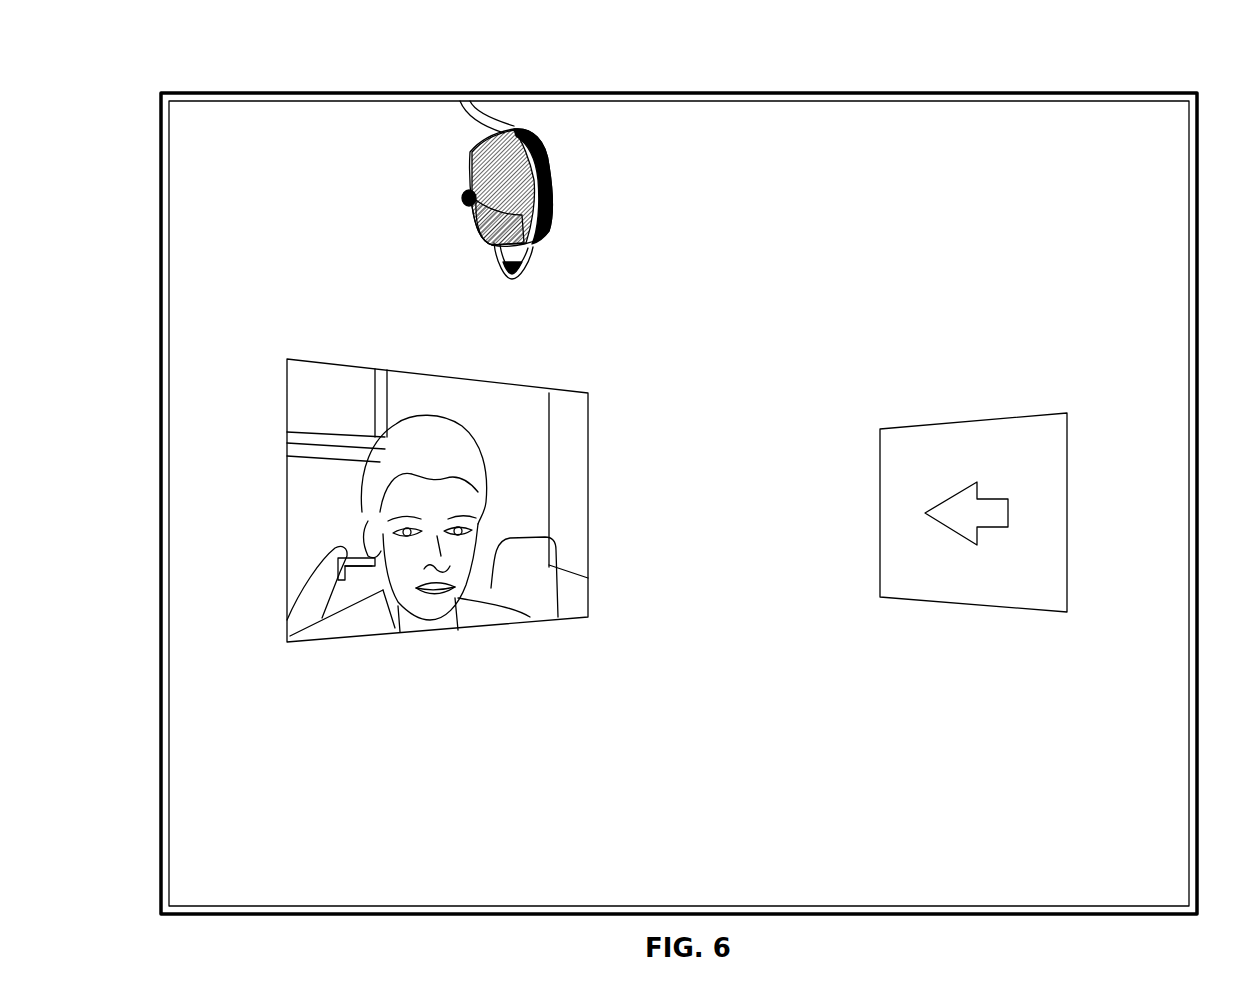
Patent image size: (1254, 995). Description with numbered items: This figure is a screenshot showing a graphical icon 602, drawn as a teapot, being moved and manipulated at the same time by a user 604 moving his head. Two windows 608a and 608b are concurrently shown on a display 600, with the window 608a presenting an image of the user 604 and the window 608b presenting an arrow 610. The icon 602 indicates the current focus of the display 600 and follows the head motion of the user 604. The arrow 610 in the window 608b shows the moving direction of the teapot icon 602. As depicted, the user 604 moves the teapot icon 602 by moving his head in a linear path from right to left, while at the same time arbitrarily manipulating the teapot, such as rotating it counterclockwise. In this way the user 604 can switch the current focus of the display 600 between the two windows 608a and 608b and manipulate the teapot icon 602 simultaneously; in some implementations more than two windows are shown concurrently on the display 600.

The display 600 is at (151, 74).
The graphical icon 602 is at (537, 146).
The user 604 is at (351, 519).
The window 608a is at (404, 529).
The window 608b is at (975, 517).
The arrow 610 is at (988, 500).